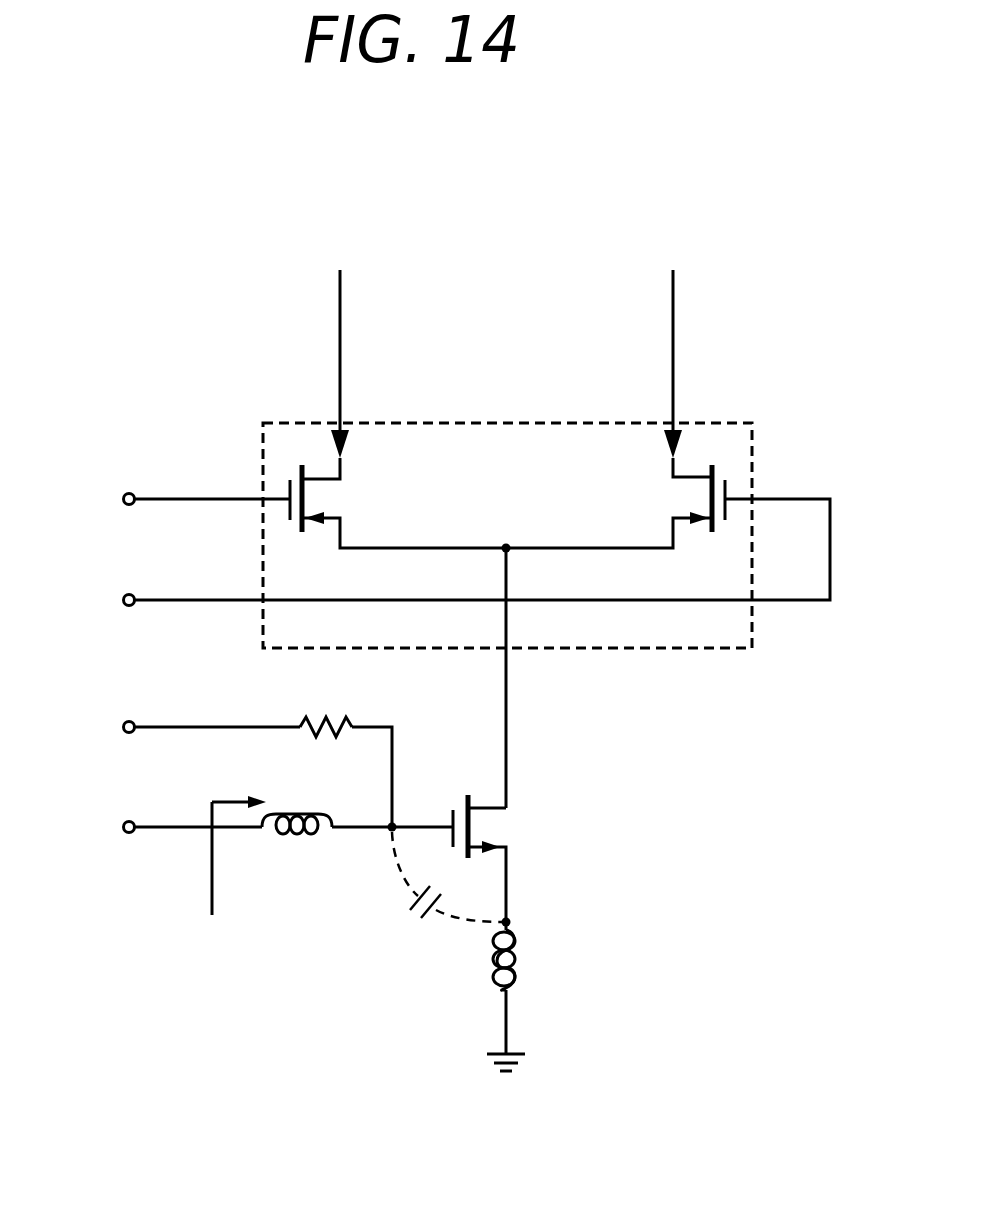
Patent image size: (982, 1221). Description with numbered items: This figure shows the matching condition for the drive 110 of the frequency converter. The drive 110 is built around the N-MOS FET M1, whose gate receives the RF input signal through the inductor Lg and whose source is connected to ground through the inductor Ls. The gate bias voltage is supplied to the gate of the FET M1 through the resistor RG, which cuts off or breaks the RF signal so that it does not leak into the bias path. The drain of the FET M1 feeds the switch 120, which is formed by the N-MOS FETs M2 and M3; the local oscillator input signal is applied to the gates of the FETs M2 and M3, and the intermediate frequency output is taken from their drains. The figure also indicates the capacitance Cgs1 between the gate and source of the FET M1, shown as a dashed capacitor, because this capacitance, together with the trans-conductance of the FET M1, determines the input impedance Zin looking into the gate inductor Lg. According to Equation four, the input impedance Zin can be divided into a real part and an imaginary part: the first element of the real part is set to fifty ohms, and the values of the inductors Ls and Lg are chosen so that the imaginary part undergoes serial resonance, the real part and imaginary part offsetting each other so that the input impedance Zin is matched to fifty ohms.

The drive 110 is at (656, 797).
The switch 120 is at (752, 630).
The N-MOS FET M1 is at (504, 862).
The N-MOS FET M2 is at (398, 503).
The N-MOS FET M3 is at (615, 503).
The resistor RG is at (326, 706).
The inductor Lg is at (297, 848).
The inductor Ls is at (530, 960).
The capacitance between a gate and source of the FET M1 Cgs1 is at (425, 895).
The input impedance Zin is at (224, 878).